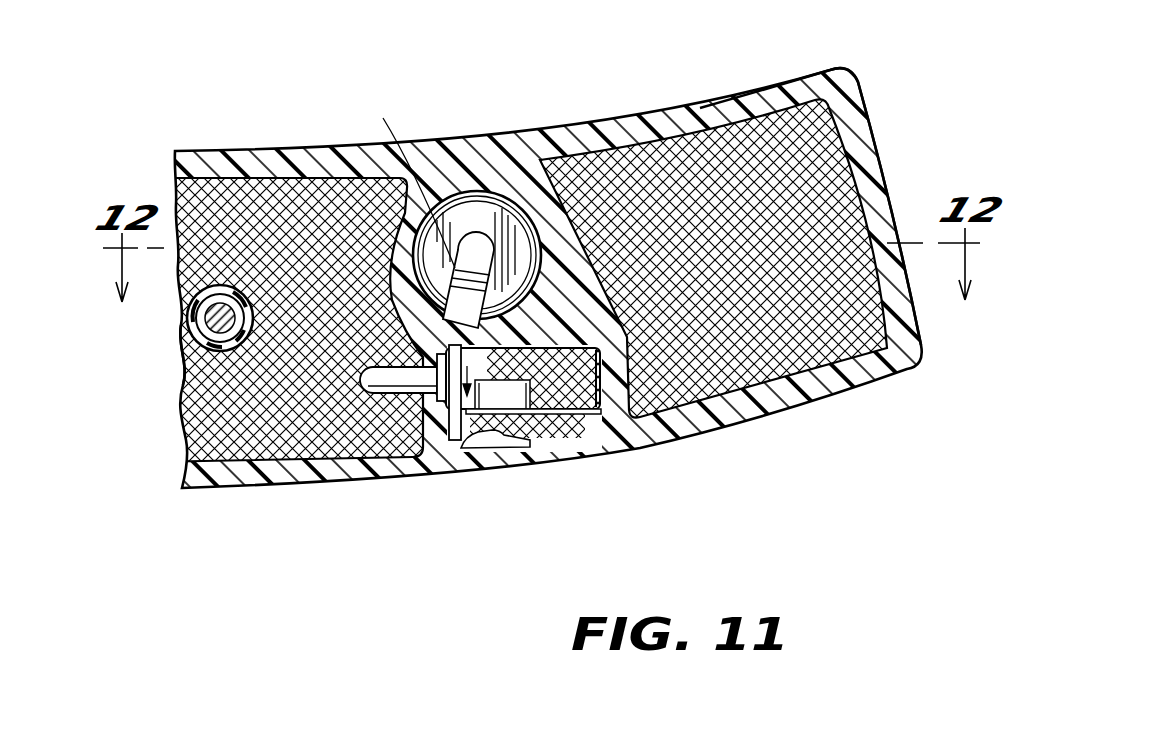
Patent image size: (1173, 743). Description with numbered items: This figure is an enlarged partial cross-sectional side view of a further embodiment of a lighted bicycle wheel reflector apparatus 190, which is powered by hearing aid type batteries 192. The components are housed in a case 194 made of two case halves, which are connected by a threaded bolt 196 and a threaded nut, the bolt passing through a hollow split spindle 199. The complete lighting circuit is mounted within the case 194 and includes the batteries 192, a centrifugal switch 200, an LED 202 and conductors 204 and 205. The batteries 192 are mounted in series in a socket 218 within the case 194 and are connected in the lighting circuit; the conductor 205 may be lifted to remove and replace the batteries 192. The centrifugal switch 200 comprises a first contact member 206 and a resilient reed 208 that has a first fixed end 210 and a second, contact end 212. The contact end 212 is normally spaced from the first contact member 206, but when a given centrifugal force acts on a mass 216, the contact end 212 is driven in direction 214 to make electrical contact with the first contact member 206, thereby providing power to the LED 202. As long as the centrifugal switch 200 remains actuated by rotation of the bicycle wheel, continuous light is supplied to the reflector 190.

The lighted bicycle wheel reflector apparatus 190 is at (255, 120).
The hearing aid type batteries 192 is at (493, 210).
The case 194 is at (823, 68).
The threaded bolt 196 is at (212, 326).
The hollow split spindle 199 is at (183, 373).
The centrifugal switch 200 is at (528, 469).
The LED 202 is at (362, 388).
The conductor 204 is at (433, 456).
The conductor 205 is at (391, 184).
The first contact member 206 is at (467, 448).
The resilient reed 208 is at (590, 416).
The first fixed end 210 is at (573, 413).
The contact end 212 is at (462, 462).
The direction 214 is at (583, 262).
The mass 216 is at (511, 483).
The socket 218 is at (470, 190).